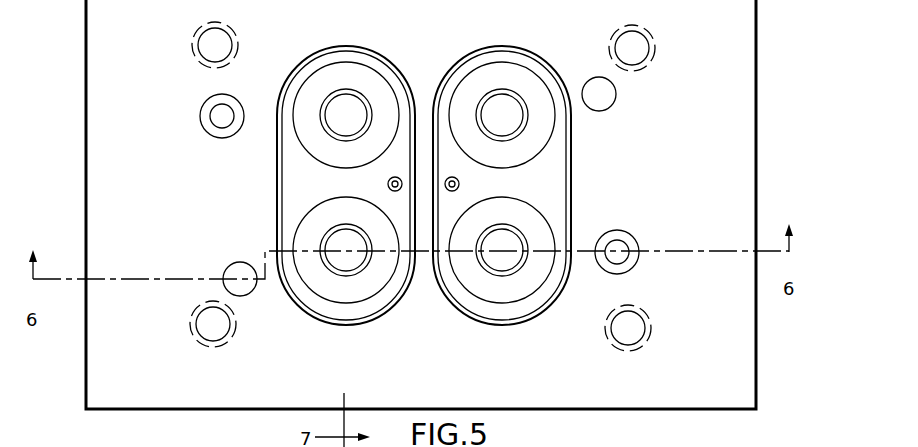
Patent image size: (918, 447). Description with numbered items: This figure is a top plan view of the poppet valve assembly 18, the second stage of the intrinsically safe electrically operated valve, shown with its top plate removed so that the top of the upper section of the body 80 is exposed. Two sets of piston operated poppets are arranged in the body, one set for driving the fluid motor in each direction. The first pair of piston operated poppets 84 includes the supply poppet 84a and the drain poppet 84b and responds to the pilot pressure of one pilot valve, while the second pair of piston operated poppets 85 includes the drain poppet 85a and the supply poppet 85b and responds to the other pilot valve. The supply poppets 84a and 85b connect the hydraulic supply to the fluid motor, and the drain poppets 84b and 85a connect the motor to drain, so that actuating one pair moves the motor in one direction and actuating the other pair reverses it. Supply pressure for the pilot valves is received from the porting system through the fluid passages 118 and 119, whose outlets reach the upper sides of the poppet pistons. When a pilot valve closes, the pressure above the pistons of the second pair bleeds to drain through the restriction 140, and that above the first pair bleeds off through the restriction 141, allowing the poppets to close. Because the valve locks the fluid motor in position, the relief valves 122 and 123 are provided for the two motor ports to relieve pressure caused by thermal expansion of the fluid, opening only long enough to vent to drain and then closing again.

The poppet valve assembly 18 is at (779, 176).
The body 80 is at (758, 106).
The pair of piston operated poppets 84 is at (351, 46).
The supply poppet 84a is at (319, 93).
The drain poppet 84b is at (315, 230).
The second pair of piston operated poppets 85 is at (511, 45).
The drain poppet 85a is at (528, 97).
The supply poppet 85b is at (533, 240).
The fluid passage 118 is at (211, 117).
The fluid passage 119 is at (622, 250).
The relief valve 122 is at (246, 289).
The relief valve 123 is at (611, 95).
The restriction 140 is at (459, 184).
The restriction 141 is at (388, 184).